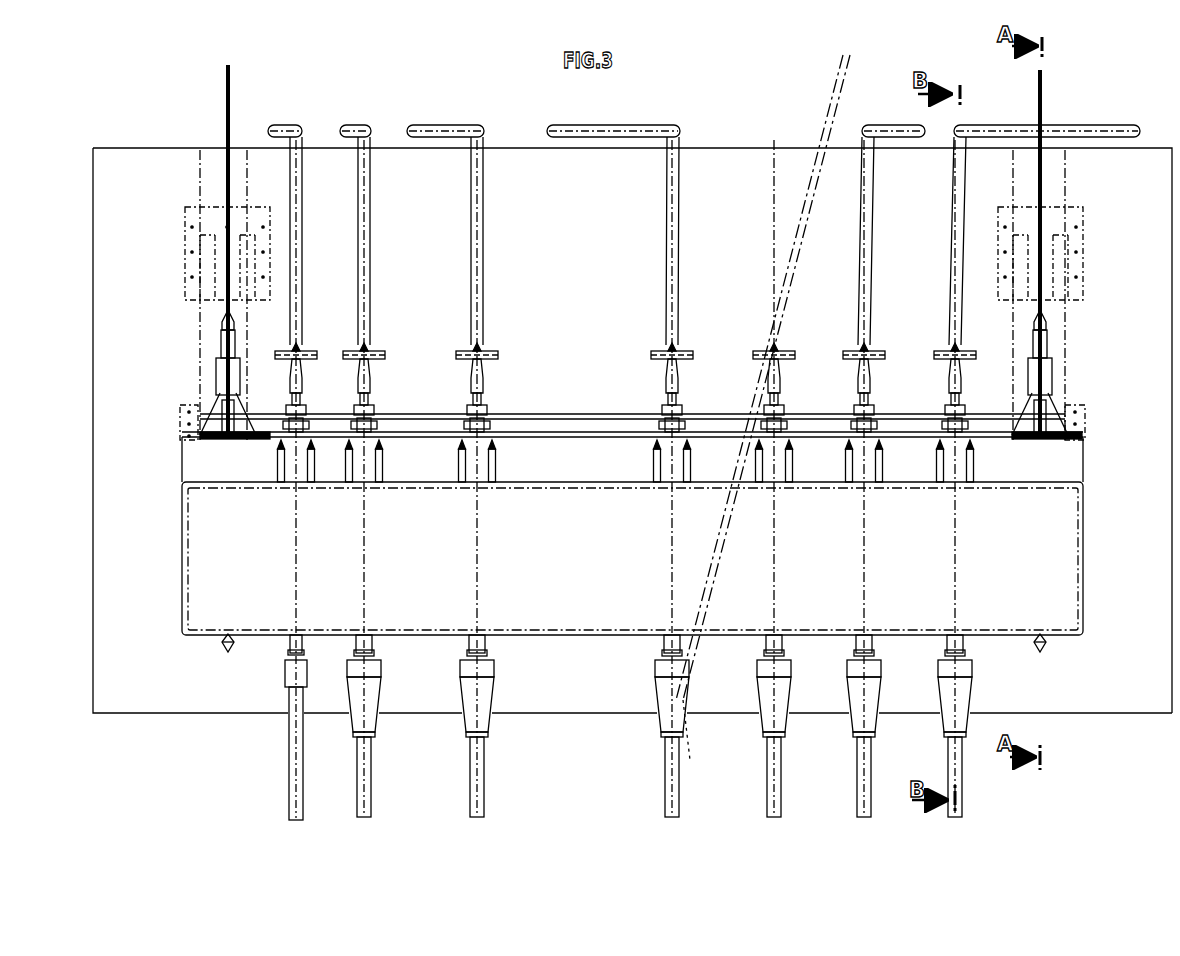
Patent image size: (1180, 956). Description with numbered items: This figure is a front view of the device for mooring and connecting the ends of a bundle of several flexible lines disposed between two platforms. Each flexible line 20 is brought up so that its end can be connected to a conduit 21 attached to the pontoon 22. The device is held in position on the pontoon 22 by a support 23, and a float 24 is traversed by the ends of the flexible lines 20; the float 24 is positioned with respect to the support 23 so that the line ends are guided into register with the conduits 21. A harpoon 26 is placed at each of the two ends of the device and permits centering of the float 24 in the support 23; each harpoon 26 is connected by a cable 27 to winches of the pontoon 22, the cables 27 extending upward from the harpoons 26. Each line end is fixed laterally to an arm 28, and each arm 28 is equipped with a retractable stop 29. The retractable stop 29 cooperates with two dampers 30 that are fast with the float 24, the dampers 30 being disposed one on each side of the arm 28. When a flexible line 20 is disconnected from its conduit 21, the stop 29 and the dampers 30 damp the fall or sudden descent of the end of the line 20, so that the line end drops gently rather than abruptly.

The flexible line 20 is at (472, 769).
The conduit 21 is at (472, 238).
The pontoon 22 is at (152, 153).
The support 23 is at (205, 373).
The float 24 is at (186, 585).
The harpoon 26 is at (226, 337).
The cable 27 is at (228, 97).
The arm 28 is at (783, 375).
The retractable stop 29 is at (885, 357).
The damper 30 is at (348, 462).